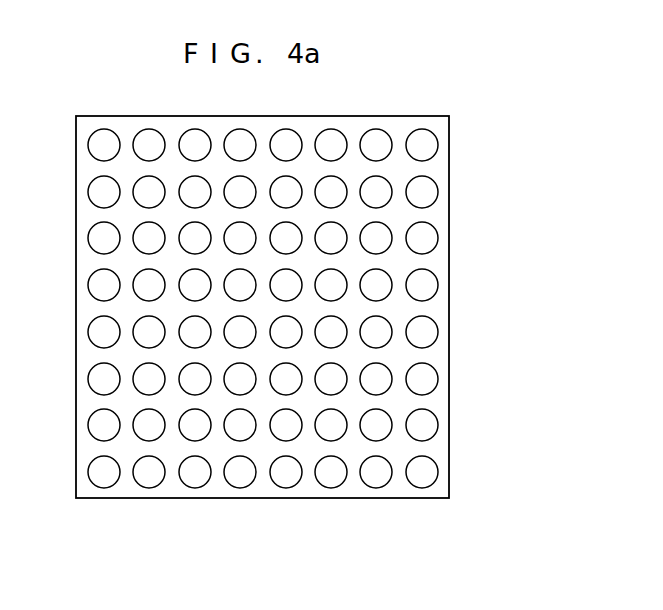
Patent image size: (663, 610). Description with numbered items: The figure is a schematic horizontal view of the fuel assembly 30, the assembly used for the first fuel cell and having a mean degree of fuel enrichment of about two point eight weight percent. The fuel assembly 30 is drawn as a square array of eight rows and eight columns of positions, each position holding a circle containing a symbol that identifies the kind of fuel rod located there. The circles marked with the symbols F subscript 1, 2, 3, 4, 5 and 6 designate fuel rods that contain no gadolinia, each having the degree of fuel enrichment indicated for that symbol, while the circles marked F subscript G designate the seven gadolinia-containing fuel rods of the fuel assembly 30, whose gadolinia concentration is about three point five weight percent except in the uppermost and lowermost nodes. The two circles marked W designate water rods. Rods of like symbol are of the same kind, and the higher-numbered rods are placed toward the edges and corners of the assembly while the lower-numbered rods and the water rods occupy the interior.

The fuel assembly 30 is at (306, 307).
The filter element F1 1 is at (263, 308).
The filter element F2 2 is at (262, 308).
The filter element F3 3 is at (262, 308).
The filter element F4 4 is at (263, 308).
The filter element F5 5 is at (263, 308).
The filter element F6 6 is at (263, 308).